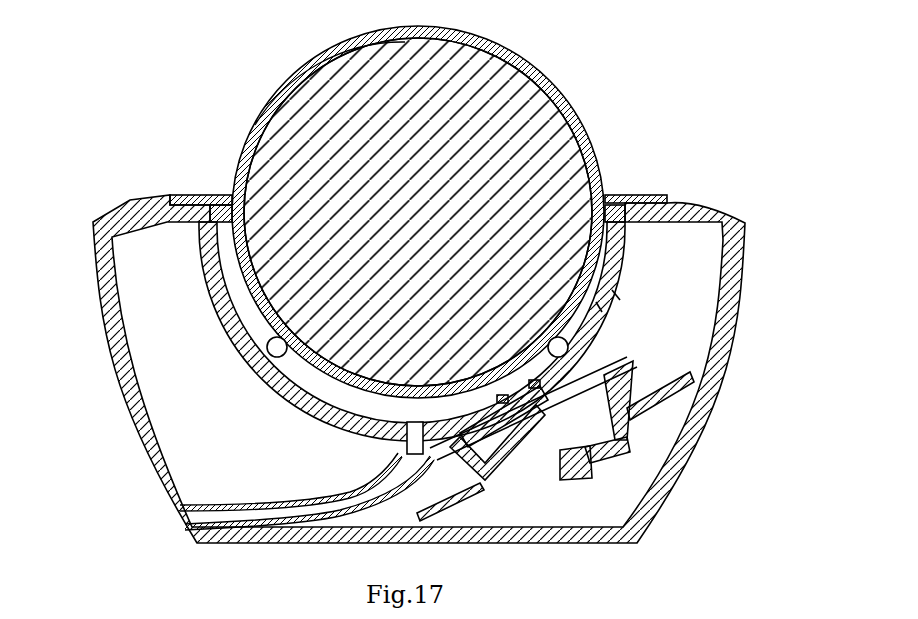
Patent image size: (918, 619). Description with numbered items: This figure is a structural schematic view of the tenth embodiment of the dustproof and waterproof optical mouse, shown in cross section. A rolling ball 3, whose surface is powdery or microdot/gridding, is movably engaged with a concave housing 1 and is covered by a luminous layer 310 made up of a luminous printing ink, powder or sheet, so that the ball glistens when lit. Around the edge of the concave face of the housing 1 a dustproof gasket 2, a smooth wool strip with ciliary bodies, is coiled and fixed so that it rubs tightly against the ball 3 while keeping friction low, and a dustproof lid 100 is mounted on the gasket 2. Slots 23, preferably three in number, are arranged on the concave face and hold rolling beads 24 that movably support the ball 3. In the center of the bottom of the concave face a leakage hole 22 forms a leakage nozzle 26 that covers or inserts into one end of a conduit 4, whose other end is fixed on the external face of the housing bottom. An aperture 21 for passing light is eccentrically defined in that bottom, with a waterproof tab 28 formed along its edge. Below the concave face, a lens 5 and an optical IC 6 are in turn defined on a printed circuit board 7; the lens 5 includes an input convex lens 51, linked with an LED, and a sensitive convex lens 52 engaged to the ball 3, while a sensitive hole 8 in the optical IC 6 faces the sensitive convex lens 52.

The concave housing 1 is at (688, 195).
The dustproof gasket 2 is at (632, 206).
The rolling ball 3 is at (557, 133).
The conduit 4 is at (398, 462).
The lens 5 is at (540, 392).
The optical IC 6 is at (625, 441).
The printed circuit board 7 is at (636, 371).
The sensitive hole 8 is at (585, 428).
The aperture 21 is at (568, 351).
The leakage hole 22 is at (265, 385).
The slots 23 is at (598, 306).
The rolling beads 24 is at (615, 295).
The leakage nozzle 26 is at (403, 450).
The waterproof tab 28 is at (580, 332).
The input convex lens 51 is at (582, 482).
The sensitive convex lens 52 is at (692, 400).
The dustproof lid 100 is at (197, 194).
The luminous layer 310 is at (503, 46).